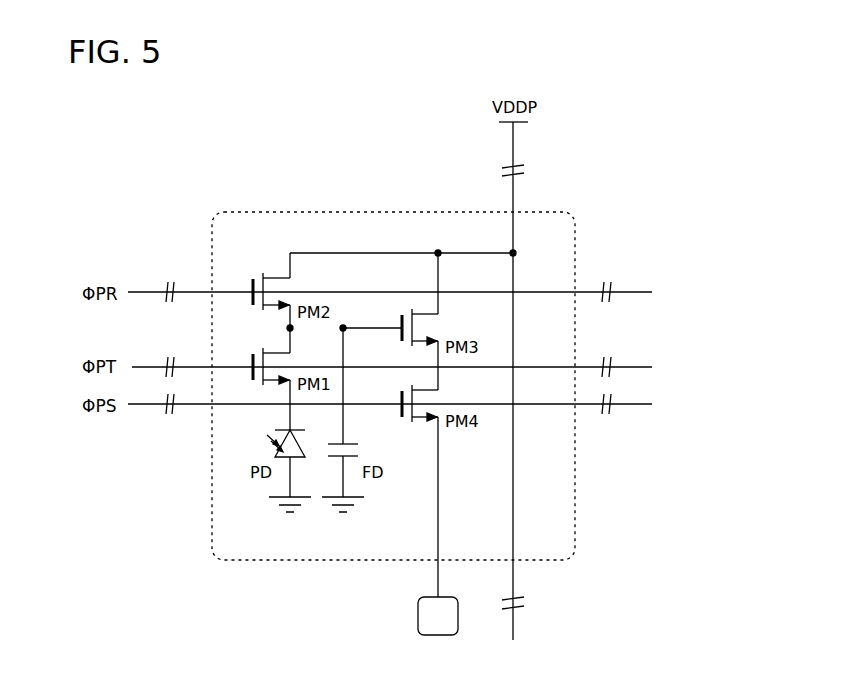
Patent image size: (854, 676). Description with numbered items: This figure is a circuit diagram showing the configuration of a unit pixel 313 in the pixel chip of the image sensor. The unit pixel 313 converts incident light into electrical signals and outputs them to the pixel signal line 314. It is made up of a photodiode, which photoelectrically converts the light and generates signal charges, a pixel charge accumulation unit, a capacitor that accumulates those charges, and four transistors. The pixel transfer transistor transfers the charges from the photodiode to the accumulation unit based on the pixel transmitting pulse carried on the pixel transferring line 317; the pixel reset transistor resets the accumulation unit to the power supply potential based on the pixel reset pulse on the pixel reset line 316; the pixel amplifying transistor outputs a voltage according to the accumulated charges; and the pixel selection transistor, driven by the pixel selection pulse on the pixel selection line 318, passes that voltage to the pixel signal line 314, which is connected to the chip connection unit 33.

The unit pixel 313 is at (308, 212).
The pixel signal line 314 is at (438, 517).
The pixel reset line 316 is at (632, 293).
The pixel transferring line 317 is at (632, 367).
The pixel selection line 318 is at (632, 404).
The chip connection unit 33 is at (418, 616).